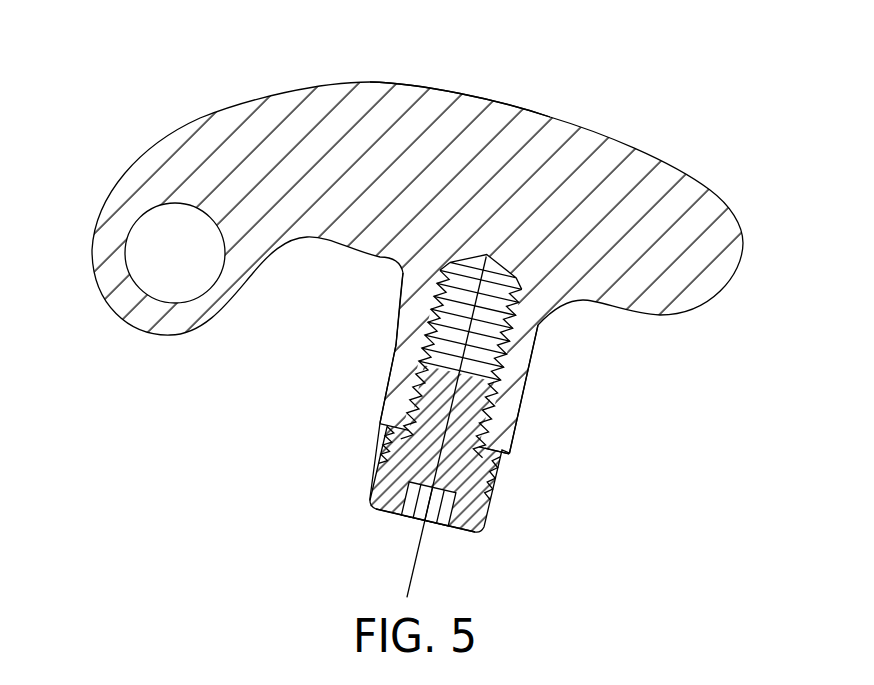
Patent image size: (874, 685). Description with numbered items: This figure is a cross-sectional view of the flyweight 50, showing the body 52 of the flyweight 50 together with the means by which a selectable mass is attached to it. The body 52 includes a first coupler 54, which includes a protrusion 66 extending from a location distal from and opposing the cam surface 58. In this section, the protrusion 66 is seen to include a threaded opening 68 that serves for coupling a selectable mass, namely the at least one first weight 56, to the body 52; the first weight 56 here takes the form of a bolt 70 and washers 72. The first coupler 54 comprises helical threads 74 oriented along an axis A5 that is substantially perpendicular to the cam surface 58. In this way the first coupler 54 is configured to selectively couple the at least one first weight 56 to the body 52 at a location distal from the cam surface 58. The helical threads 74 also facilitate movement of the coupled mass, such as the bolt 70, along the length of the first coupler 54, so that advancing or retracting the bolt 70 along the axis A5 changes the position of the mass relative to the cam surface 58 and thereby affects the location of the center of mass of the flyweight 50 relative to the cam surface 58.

The flyweight 50 is at (142, 82).
The body 52 is at (730, 207).
The first coupler 54 is at (375, 360).
The at least one first weight 56 is at (353, 493).
The cam surface 58 is at (468, 97).
The protrusion 66 is at (530, 388).
The threaded opening 68 is at (484, 267).
The bolt 70 is at (443, 446).
The washers 72 is at (438, 462).
The helical threads 74 is at (461, 363).
The axis A5 is at (446, 427).